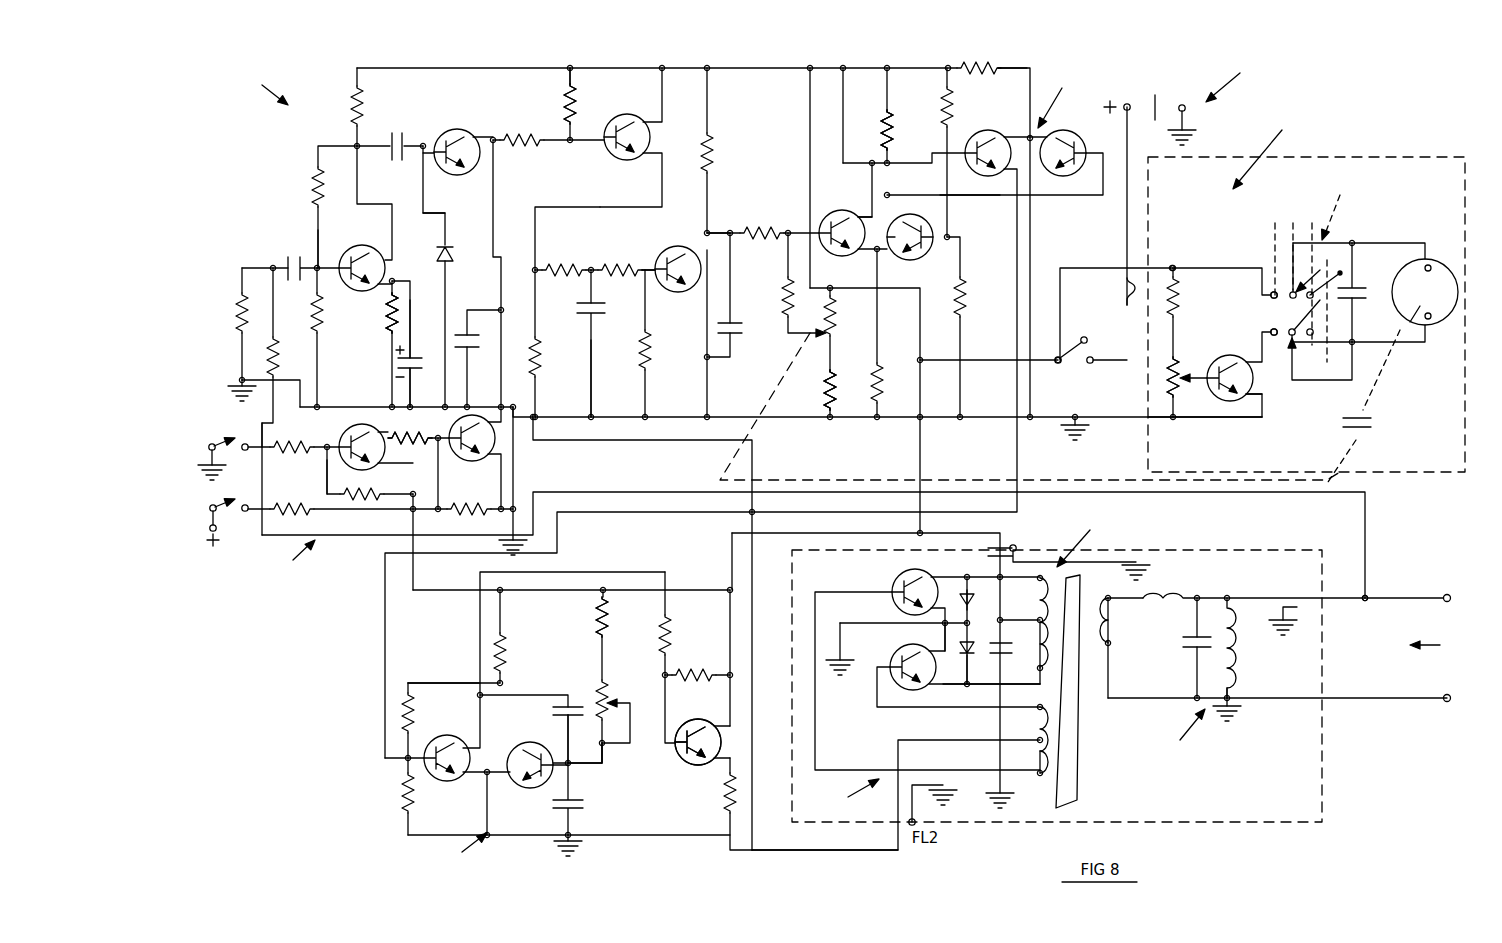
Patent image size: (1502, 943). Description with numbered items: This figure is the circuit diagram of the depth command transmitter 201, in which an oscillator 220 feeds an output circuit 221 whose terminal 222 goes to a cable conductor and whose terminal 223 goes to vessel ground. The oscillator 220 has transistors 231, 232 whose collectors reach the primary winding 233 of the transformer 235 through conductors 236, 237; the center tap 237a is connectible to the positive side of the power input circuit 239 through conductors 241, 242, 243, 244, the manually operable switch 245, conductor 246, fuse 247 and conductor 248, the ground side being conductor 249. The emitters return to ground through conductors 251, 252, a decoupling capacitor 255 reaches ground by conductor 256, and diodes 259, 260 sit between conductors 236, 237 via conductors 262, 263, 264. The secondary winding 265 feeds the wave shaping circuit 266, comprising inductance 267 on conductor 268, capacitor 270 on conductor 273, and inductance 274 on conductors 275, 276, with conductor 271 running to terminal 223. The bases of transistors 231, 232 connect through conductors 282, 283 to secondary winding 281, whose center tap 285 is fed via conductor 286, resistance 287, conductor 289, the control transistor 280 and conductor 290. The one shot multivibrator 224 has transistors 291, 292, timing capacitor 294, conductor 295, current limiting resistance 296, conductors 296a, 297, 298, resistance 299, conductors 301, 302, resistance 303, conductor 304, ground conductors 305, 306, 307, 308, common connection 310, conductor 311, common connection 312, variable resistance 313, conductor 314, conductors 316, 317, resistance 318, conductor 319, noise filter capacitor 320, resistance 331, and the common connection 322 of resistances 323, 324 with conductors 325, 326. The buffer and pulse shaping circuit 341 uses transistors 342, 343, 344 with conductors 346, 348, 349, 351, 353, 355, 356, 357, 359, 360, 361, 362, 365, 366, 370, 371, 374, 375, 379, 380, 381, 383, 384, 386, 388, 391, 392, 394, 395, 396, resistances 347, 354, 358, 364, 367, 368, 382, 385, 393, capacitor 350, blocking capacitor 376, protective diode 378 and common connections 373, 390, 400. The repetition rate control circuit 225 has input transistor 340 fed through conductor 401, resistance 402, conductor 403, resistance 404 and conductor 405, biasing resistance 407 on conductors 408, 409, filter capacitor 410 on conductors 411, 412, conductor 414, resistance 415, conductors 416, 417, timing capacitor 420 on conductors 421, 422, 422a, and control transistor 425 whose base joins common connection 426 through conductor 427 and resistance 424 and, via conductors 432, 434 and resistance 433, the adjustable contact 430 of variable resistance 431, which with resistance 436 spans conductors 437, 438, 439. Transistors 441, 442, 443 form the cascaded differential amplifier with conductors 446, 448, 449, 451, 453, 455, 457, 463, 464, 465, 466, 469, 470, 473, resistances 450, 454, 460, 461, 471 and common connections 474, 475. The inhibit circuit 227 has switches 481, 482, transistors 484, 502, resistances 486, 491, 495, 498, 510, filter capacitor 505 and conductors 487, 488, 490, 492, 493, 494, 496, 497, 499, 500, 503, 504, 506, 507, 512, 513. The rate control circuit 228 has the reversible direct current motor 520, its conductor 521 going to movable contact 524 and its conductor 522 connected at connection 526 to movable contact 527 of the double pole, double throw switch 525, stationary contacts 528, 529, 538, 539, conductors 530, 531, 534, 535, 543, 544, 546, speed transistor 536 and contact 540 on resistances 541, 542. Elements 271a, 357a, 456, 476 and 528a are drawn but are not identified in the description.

The depth command transmitter 201 is at (1240, 82).
The oscillator 220 is at (1057, 686).
The output circuit 221 is at (1445, 645).
The terminal 222 is at (1440, 594).
The terminal 223 is at (1440, 694).
The one shot multivibrator 224 is at (451, 851).
The repetition rate control circuit 225 is at (1069, 95).
The inhibit circuit 227 is at (284, 560).
The rate control circuit 228 is at (1306, 294).
The transistor 231 is at (893, 580).
The transistor 232 is at (892, 660).
The primary winding 233 is at (1036, 592).
The transformer 235 is at (1090, 660).
The conductor 236 is at (965, 575).
The conductor 237 is at (990, 687).
The center tap 237a is at (1035, 630).
The power input circuit 239 is at (1155, 97).
The conductor 241 is at (1024, 619).
The conductor 242 is at (958, 533).
The conductor 243 is at (808, 138).
The conductor 244 is at (970, 360).
The manually operable switch 245 is at (1075, 356).
The conductor 246 is at (1092, 356).
The fuse 247 is at (1122, 290).
The conductor 248 is at (1125, 248).
The conductor 249 is at (1185, 122).
The conductor 251 is at (944, 640).
The conductor 252 is at (850, 622).
The decoupling capacitor 255 is at (1006, 655).
The conductor 256 is at (990, 738).
The diode 259 is at (972, 603).
The diode 260 is at (964, 650).
The conductor 262 is at (975, 594).
The conductor 263 is at (970, 624).
The conductor 264 is at (975, 650).
The secondary winding 265 is at (1112, 630).
The wave shaping circuit 266 is at (1268, 592).
The inductance 267 is at (1170, 596).
The conductor 268 is at (1107, 597).
The capacitor 270 is at (1180, 645).
The conductor 271 is at (1292, 700).
The conductor 271a is at (1195, 620).
The conductor 273 is at (1195, 678).
The inductance 274 is at (1236, 650).
The conductor 275 is at (1280, 607).
The conductor 276 is at (1230, 692).
The control transistor 280 is at (690, 765).
The secondary winding 281 is at (1037, 762).
The conductor 282 is at (817, 728).
The conductor 283 is at (920, 708).
The center tap 285 is at (1036, 735).
The conductor 286 is at (820, 850).
The resistance 287 is at (728, 795).
The conductor 289 is at (728, 768).
The conductor 290 is at (730, 545).
The multivibrator first transistor 291 is at (463, 778).
The multivibrator second transistor 292 is at (528, 788).
The capacitor 294 is at (552, 710).
The conductor 295 is at (552, 722).
The current limiting resistance 296 is at (505, 650).
The conductor 296a is at (502, 612).
The conductor 297 is at (712, 590).
The conductor 298 is at (478, 620).
The resistance 299 is at (670, 628).
The conductor 301 is at (672, 659).
The conductor 302 is at (694, 670).
The resistance 303 is at (667, 692).
The conductor 304 is at (714, 722).
The conductor 305 is at (488, 769).
The conductor 306 is at (489, 804).
The conductor 307 is at (540, 835).
The conductor 308 is at (575, 845).
The common connection 310 is at (478, 695).
The conductor 311 is at (503, 683).
The common connection 312 is at (571, 766).
The variable resistance 313 is at (598, 700).
The conductor 314 is at (570, 735).
The conductor 316 is at (600, 760).
The conductor 317 is at (600, 658).
The resistance 318 is at (600, 628).
The conductor 319 is at (606, 605).
The capacitor 320 is at (584, 804).
The common connection 322 is at (405, 760).
The resistance 323 is at (410, 690).
The resistance 324 is at (411, 808).
The conductor 325 is at (410, 738).
The conductor 326 is at (456, 683).
The resistance 331 is at (618, 702).
The input transistor 340 is at (681, 246).
The buffer and pulse shaping circuit 341 is at (252, 88).
The transistor 342 is at (370, 246).
The transistor 343 is at (464, 129).
The transistor 344 is at (618, 157).
The conductor 346 is at (292, 380).
The resistance 347 is at (276, 352).
The conductor 348 is at (315, 303).
The conductor 349 is at (270, 266).
The capacitor 350 is at (300, 255).
The conductor 351 is at (330, 266).
The conductor 353 is at (358, 186).
The resistance 354 is at (352, 98).
The conductor 355 is at (646, 68).
The conductor 356 is at (395, 280).
The conductor 357 is at (390, 298).
The battery 357a is at (413, 358).
The resistance 358 is at (390, 330).
The conductor 359 is at (405, 370).
The conductor 360 is at (368, 405).
The conductor 361 is at (240, 383).
The conductor 362 is at (412, 397).
The resistance 364 is at (240, 303).
The conductor 365 is at (240, 356).
The conductor 366 is at (320, 230).
The resistance 367 is at (388, 318).
The resistance 368 is at (316, 186).
The conductor 370 is at (316, 146).
The conductor 371 is at (319, 366).
The common connection 373 is at (352, 143).
The conductor 374 is at (424, 178).
The conductor 375 is at (425, 144).
The blocking capacitor 376 is at (398, 130).
The protective diode 378 is at (437, 252).
The conductor 379 is at (446, 217).
The conductor 380 is at (447, 276).
The conductor 381 is at (494, 136).
The resistance 382 is at (528, 139).
The conductor 383 is at (571, 143).
The conductor 384 is at (577, 118).
The resistance 385 is at (576, 97).
The conductor 386 is at (568, 78).
The conductor 388 is at (540, 205).
The common connection 390 is at (565, 145).
The conductor 391 is at (663, 100).
The conductor 392 is at (660, 200).
The resistance 393 is at (540, 362).
The conductor 394 is at (538, 415).
The conductor 395 is at (850, 419).
The conductor 396 is at (1080, 425).
The common connection 400 is at (537, 265).
The conductor 401 is at (537, 290).
The resistance 402 is at (560, 265).
The conductor 403 is at (592, 265).
The resistance 404 is at (615, 265).
The conductor 405 is at (650, 265).
The biasing resistance 407 is at (650, 350).
The conductor 408 is at (647, 303).
The conductor 409 is at (648, 415).
The filter capacitor 410 is at (598, 315).
The conductor 411 is at (593, 288).
The conductor 412 is at (592, 390).
The conductor 414 is at (712, 175).
The resistance 415 is at (714, 150).
The conductor 416 is at (709, 115).
The conductor 417 is at (709, 412).
The capacitor 420 is at (744, 329).
The conductor 421 is at (731, 282).
The conductor 422 is at (725, 358).
The conductor 422a is at (726, 231).
The resistance 424 is at (762, 231).
The control transistor 425 is at (842, 256).
The common connection 426 is at (723, 230).
The conductor 427 is at (789, 230).
The adjustable contact 430 is at (828, 312).
The variable resistance 431 is at (833, 360).
The conductor 432 is at (787, 260).
The resistance 433 is at (786, 300).
The conductor 434 is at (795, 336).
The resistance 436 is at (828, 385).
The conductor 437 is at (840, 290).
The conductor 438 is at (828, 360).
The conductor 439 is at (828, 415).
The transistor 441 is at (908, 259).
The transistor 442 is at (1063, 176).
The transistor 443 is at (992, 176).
The conductor 446 is at (1015, 262).
The conductor 448 is at (871, 184).
The conductor 449 is at (845, 150).
The resistance 450 is at (887, 114).
The conductor 451 is at (886, 70).
The conductor 453 is at (879, 330).
The resistance 454 is at (892, 115).
The conductor 455 is at (879, 410).
The resistor 456 is at (893, 135).
The conductor 457 is at (890, 160).
The resistance 460 is at (950, 105).
The resistance 461 is at (966, 300).
The conductor 463 is at (945, 70).
The conductor 464 is at (950, 225).
The conductor 465 is at (958, 268).
The conductor 466 is at (962, 390).
The conductor 469 is at (1025, 136).
The conductor 470 is at (1026, 66).
The resistance 471 is at (978, 64).
The conductor 473 is at (1032, 222).
The common connection 474 is at (868, 163).
The common connection 475 is at (920, 195).
The conductor 476 is at (970, 196).
The switch 481 is at (212, 443).
The switch 482 is at (218, 504).
The transistor 484 is at (350, 428).
The resistance 486 is at (300, 452).
The conductor 487 is at (245, 443).
The conductor 488 is at (215, 460).
The conductor 490 is at (406, 444).
The resistance 491 is at (396, 432).
The conductor 492 is at (436, 434).
The conductor 493 is at (440, 472).
The conductor 494 is at (360, 512).
The resistance 495 is at (452, 512).
The conductor 496 is at (515, 472).
The conductor 497 is at (505, 514).
The resistance 498 is at (355, 490).
The conductor 499 is at (325, 487).
The conductor 500 is at (400, 490).
The transistor 502 is at (468, 462).
The conductor 503 is at (492, 237).
The conductor 504 is at (475, 505).
The filter capacitor 505 is at (478, 340).
The conductor 506 is at (490, 309).
The conductor 507 is at (469, 380).
The resistance 510 is at (300, 515).
The conductor 512 is at (255, 512).
The conductor 513 is at (217, 530).
The reversible direct current motor 520 is at (1426, 258).
The conductor 521 is at (1370, 243).
The conductor 522 is at (1405, 344).
The movable contact 524 is at (1308, 272).
The double pole, double throw switch 525 is at (1329, 273).
The connection 526 is at (1296, 352).
The movable contact 527 is at (1355, 310).
The stationary contact 528 is at (1356, 280).
The mechanical coupling 528a is at (1374, 425).
The stationary contact 529 is at (1356, 341).
The conductor 530 is at (1270, 297).
The conductor 531 is at (1176, 266).
The conductor 534 is at (1272, 315).
The conductor 535 is at (1252, 370).
The transistor 536 is at (1258, 400).
The stationary contact 538 is at (1265, 290).
The stationary contact 539 is at (1268, 332).
The contact 540 is at (1190, 370).
The resistance 541 is at (1178, 400).
The resistance 542 is at (1178, 300).
The conductor 543 is at (1176, 278).
The conductor 544 is at (1176, 333).
The conductor 546 is at (1210, 420).